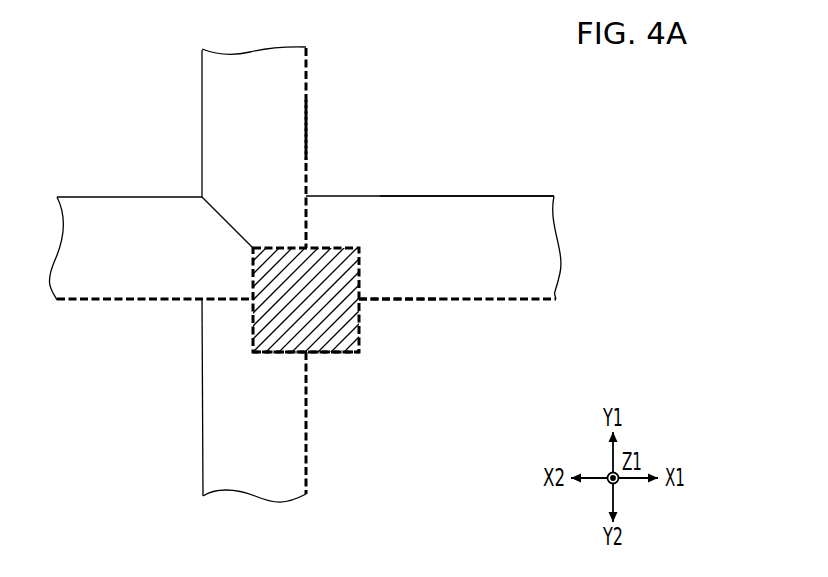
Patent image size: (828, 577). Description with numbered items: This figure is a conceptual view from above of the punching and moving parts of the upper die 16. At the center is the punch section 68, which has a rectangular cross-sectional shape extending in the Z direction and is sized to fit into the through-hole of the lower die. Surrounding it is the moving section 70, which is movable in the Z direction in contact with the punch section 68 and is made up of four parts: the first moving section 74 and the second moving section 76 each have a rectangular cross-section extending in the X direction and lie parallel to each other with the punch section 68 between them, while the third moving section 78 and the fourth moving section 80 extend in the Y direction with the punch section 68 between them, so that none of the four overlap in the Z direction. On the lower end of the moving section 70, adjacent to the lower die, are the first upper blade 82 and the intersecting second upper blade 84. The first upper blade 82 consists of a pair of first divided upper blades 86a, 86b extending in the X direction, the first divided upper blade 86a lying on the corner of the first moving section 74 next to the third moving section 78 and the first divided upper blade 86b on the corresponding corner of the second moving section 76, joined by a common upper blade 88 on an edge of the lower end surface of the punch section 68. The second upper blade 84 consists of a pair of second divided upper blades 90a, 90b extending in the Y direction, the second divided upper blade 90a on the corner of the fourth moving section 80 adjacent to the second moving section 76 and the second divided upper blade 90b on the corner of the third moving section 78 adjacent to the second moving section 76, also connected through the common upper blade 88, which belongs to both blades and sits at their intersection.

The upper die 16 is at (441, 101).
The punch section 68 is at (335, 268).
The moving section 70 is at (488, 181).
The first moving section 74 is at (103, 227).
The second moving section 76 is at (522, 252).
The third moving section 78 is at (230, 450).
The fourth moving section 80 is at (226, 94).
The first upper blade 82 is at (514, 304).
The second upper blade 84 is at (319, 72).
The first divided upper blade 86a is at (126, 306).
The first divided upper blade 86b is at (417, 303).
The common upper blade 88 is at (344, 356).
The second divided upper blade 90a is at (306, 126).
The second divided upper blade 90b is at (309, 421).